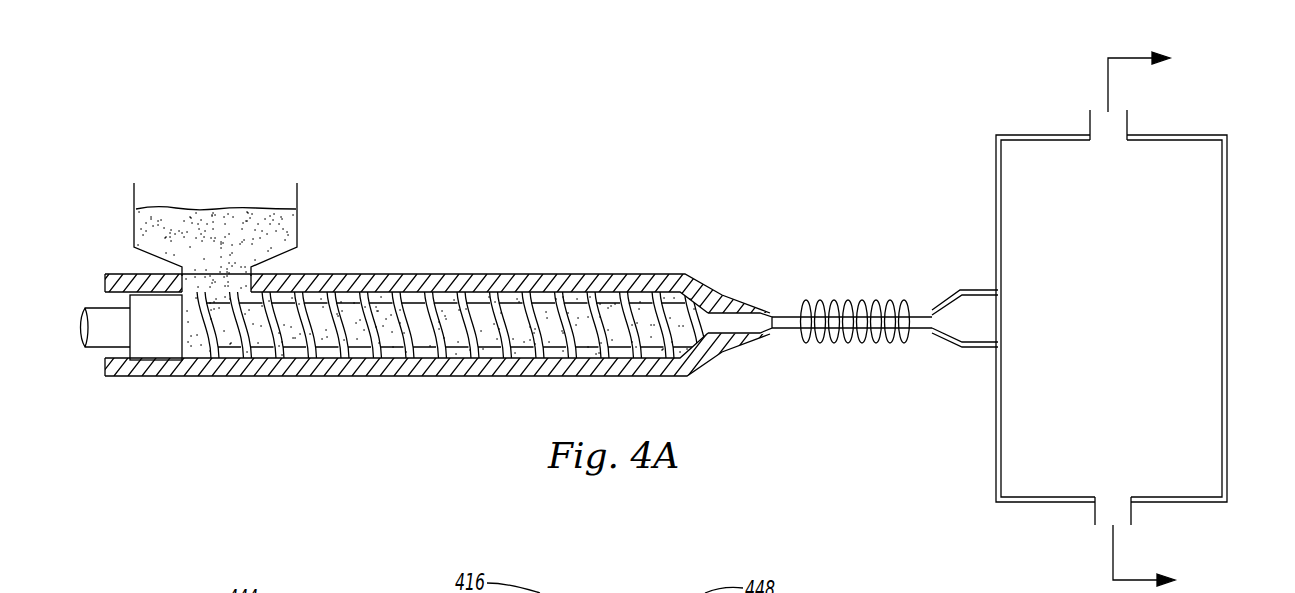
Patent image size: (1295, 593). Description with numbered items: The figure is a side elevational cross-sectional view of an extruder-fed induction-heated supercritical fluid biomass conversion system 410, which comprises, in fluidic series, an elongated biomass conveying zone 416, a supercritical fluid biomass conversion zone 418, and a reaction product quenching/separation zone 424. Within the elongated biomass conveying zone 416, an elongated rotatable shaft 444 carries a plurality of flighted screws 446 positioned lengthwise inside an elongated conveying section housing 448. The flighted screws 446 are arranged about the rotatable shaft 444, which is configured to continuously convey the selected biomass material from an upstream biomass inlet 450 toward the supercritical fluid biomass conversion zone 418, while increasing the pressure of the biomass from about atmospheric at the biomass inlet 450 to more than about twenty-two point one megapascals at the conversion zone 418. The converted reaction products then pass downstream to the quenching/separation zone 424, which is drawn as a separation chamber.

The extruder-fed induction-heated supercritical fluid biomass conversion system 410 is at (603, 182).
The elongated biomass conveying zone 416 is at (423, 380).
The supercritical fluid biomass conversion zone 418 is at (850, 352).
The reaction product quenching/separation zone 424 is at (1240, 252).
The elongated rotatable shaft 444 is at (95, 312).
The flighted screw 446 is at (270, 357).
The elongated conveying section housing 448 is at (470, 277).
The biomass inlet 450 is at (226, 197).